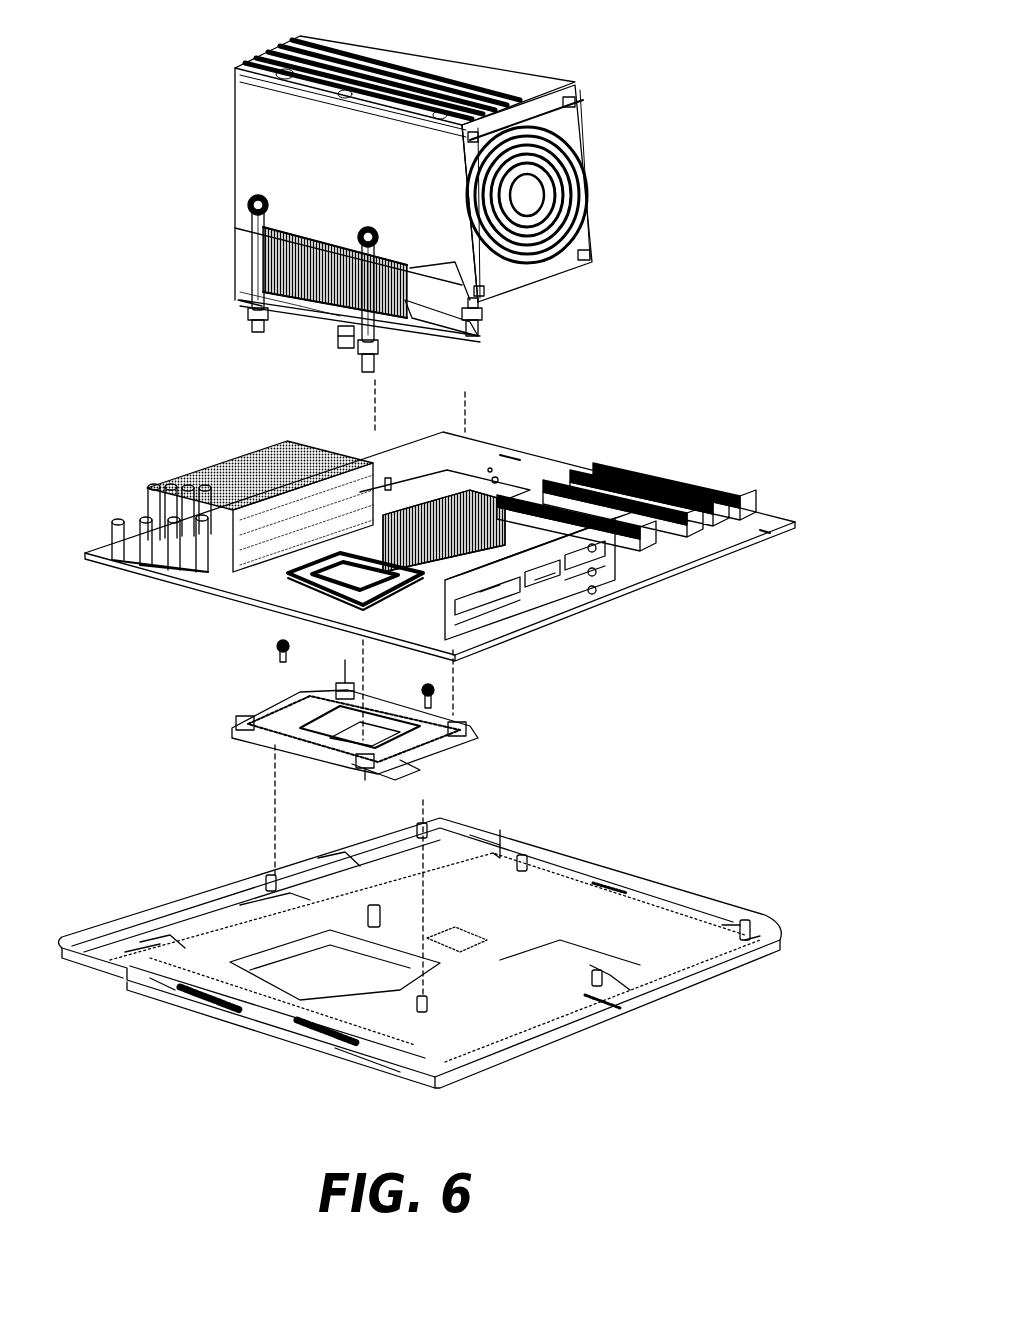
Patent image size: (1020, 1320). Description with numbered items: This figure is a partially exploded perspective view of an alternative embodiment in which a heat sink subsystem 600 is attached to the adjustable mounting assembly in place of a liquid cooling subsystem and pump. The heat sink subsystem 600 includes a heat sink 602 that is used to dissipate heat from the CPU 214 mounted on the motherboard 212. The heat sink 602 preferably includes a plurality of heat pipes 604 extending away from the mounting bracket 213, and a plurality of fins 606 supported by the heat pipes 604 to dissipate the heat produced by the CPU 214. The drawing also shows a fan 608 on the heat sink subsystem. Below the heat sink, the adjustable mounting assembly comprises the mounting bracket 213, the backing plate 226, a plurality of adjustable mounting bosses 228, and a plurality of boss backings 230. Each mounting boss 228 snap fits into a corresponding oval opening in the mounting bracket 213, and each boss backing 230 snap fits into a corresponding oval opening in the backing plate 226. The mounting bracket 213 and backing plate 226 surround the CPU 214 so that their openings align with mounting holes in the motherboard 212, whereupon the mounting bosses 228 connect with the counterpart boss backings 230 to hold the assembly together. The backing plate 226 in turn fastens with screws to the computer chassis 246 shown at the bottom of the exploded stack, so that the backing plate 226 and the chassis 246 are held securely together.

The heat sink subsystem 600 is at (226, 274).
The heat sink 602 is at (410, 320).
The heat pipes 604 is at (417, 313).
The fins 606 is at (300, 262).
The fan 608 is at (548, 195).
The adjustable mounting bosses 228 is at (255, 310).
The mounting bracket 213 is at (352, 338).
The motherboard 212 is at (688, 582).
The CPU 214 is at (296, 580).
The backing plate 226 is at (270, 756).
The boss backings 230 is at (340, 688).
The computer chassis 246 is at (515, 993).